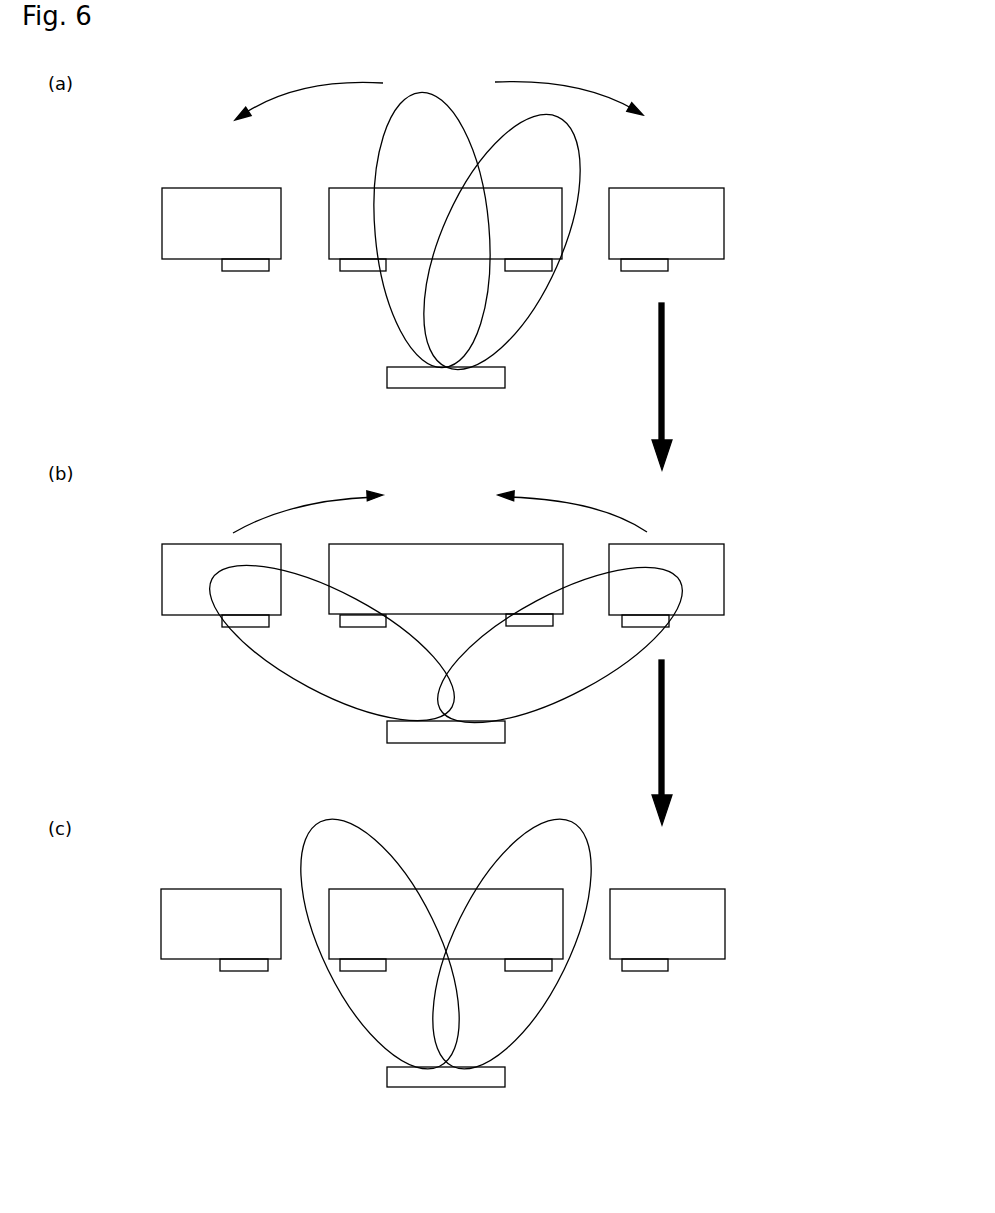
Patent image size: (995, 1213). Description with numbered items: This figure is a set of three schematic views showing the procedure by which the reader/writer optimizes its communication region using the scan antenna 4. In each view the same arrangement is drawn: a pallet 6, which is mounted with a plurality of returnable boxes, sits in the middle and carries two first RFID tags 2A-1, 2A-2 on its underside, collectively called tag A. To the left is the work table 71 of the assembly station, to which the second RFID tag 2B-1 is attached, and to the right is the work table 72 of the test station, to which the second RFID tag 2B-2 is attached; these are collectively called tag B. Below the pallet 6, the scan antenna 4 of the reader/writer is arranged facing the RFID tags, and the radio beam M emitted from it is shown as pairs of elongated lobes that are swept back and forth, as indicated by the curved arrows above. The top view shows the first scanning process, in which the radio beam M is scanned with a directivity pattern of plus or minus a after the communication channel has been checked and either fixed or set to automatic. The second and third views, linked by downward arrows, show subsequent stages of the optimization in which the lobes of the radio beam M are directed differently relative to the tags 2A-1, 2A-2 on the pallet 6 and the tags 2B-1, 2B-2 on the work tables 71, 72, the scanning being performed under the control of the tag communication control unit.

The work table 71 is at (162, 222).
The work table 72 is at (724, 213).
The pallet 6 is at (439, 188).
The RFID tag 2A-1 is at (373, 267).
The RFID tag 2A-2 is at (530, 267).
The RFID tag 2B-1 is at (223, 262).
The RFID tag 2B-2 is at (641, 272).
The scan antenna 4 is at (505, 378).
The radio beam M is at (453, 112).